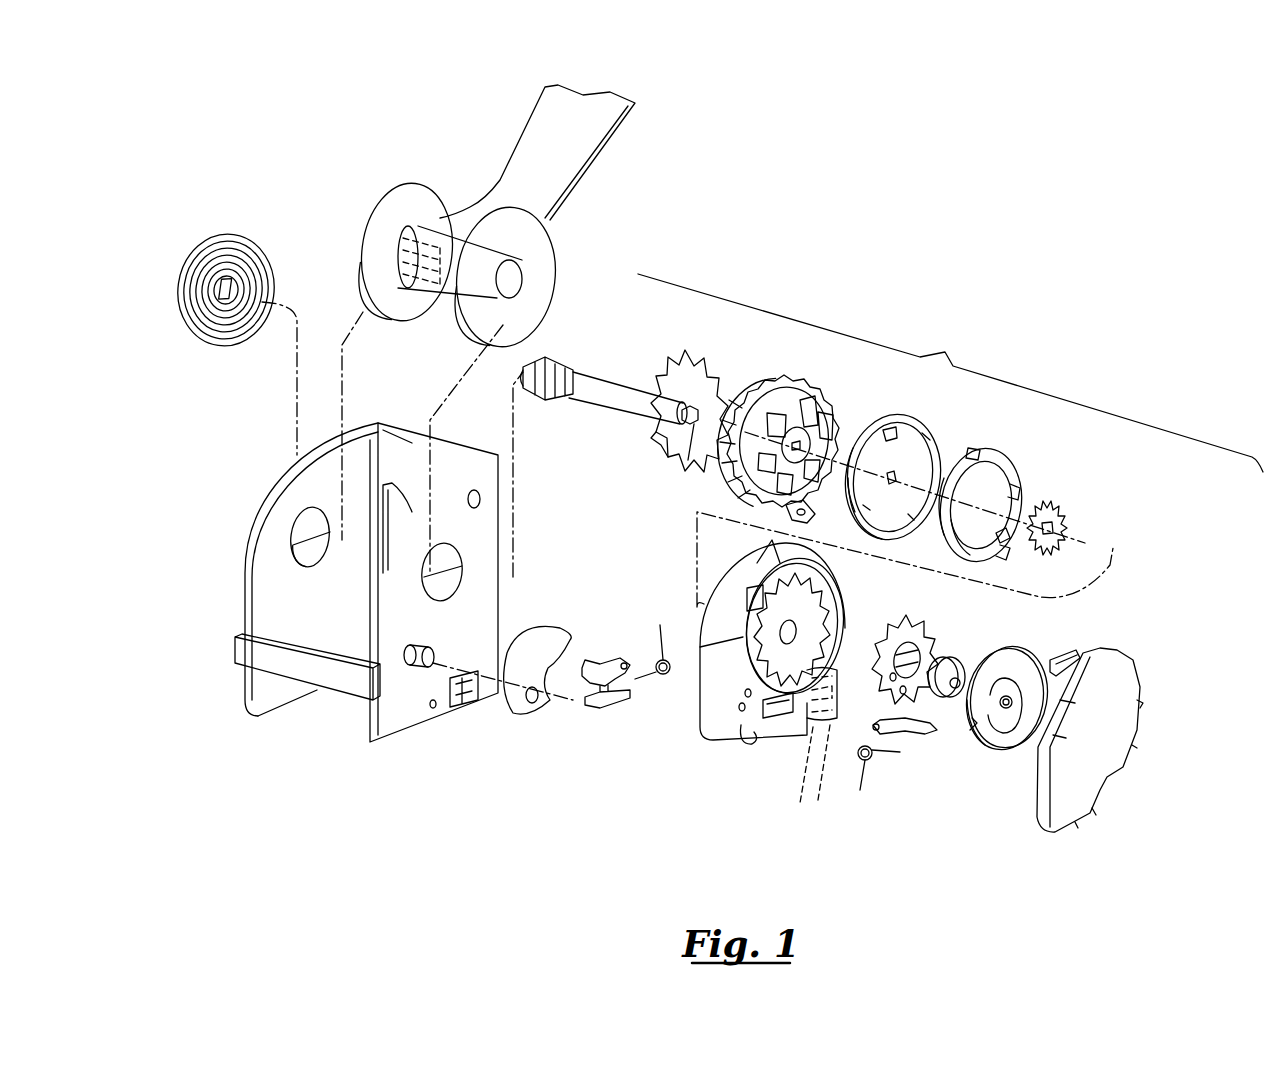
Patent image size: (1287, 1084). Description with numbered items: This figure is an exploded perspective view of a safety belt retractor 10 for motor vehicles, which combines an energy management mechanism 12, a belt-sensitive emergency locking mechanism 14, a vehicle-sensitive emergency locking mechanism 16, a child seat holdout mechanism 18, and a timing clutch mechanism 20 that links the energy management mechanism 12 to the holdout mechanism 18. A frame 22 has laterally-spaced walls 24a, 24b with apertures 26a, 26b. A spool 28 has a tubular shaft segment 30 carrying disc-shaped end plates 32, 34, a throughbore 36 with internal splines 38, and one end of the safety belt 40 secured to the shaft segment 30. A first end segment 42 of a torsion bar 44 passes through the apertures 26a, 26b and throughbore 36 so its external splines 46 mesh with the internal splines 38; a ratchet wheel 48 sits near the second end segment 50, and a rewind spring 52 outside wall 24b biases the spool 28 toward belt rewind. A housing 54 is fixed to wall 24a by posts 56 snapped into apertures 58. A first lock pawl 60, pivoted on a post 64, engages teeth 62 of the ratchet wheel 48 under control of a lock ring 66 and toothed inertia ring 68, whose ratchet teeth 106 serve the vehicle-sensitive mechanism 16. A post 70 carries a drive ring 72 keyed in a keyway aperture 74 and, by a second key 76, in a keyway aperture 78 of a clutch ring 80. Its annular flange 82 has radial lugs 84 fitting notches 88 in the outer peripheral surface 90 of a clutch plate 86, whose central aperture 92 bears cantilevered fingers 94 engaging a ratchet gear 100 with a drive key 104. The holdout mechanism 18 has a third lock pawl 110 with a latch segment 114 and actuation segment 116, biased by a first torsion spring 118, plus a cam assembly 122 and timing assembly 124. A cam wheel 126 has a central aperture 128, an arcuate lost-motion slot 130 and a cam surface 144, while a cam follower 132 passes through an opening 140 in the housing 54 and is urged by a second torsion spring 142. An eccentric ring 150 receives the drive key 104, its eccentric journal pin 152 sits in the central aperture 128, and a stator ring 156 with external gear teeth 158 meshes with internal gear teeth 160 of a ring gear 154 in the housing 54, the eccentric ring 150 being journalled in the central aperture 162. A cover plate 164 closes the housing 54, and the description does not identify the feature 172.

The safety belt retractor 10 is at (950, 373).
The energy management mechanism 12 is at (516, 330).
The belt-sensitive emergency locking mechanism 14 is at (787, 443).
The vehicle-sensitive emergency locking mechanism 16 is at (806, 778).
The child seat holdout mechanism 18 is at (1113, 712).
The timing clutch mechanism 20 is at (927, 493).
The frame 22 is at (411, 601).
The wall 24a is at (472, 601).
The wall 24b is at (307, 589).
The aperture 26a is at (453, 590).
The aperture 26b is at (318, 553).
The spool 28 is at (442, 297).
The tubular shaft segment 30 is at (480, 251).
The end plate 32 is at (395, 213).
The end plate 34 is at (545, 240).
The throughbore 36 is at (510, 278).
The internal splines 38 is at (418, 285).
The safety belt 40 is at (607, 120).
The first end segment 42 is at (533, 363).
The torsion bar 44 is at (604, 368).
The external splines 46 is at (546, 405).
The ratchet wheel 48 is at (657, 415).
The second end segment 50 is at (684, 413).
The rewind spring 52 is at (243, 243).
The housing 54 is at (765, 685).
The posts 56 is at (780, 550).
The apertures 58 is at (482, 501).
The first lock pawl 60 is at (530, 707).
The teeth 62 is at (653, 432).
The post 64 is at (413, 668).
The lock ring 66 is at (762, 383).
The toothed inertia ring 68 is at (813, 410).
The post 70 is at (690, 432).
The drive ring 72 is at (810, 433).
The keyway aperture 74 is at (706, 455).
The second key 76 is at (812, 421).
The keyway aperture 78 is at (890, 482).
The clutch ring 80 is at (920, 463).
The annular flange 82 is at (930, 432).
The radial lugs 84 is at (880, 436).
The clutch plate 86 is at (988, 505).
The notches 88 is at (970, 458).
The outer peripheral surface 90 is at (955, 523).
The central aperture 92 is at (1008, 532).
The cantilevered fingers 94 is at (1012, 489).
The ratchet gear 100 is at (1085, 519).
The drive key 104 is at (1054, 527).
The ratchet teeth 106 is at (748, 487).
The third lock pawl 110 is at (606, 673).
The latch segment 114 is at (584, 665).
The actuation segment 116 is at (613, 707).
The first torsion spring 118 is at (666, 623).
The cam assembly 122 is at (984, 717).
The timing assembly 124 is at (934, 639).
The cam wheel 126 is at (1075, 655).
The central aperture 128 is at (1010, 705).
The arcuate lost-motion slot 130 is at (1040, 708).
The cam follower 132 is at (920, 737).
The opening 140 is at (773, 713).
The second torsion spring 142 is at (867, 761).
The cam surface 144 is at (1029, 725).
The eccentric ring 150 is at (975, 718).
The eccentric journal pin 152 is at (958, 692).
The ring gear 154 is at (823, 597).
The stator ring 156 is at (914, 647).
The external gear teeth 158 is at (893, 617).
The internal gear teeth 160 is at (830, 592).
The central aperture 162 is at (952, 648).
The cover plate 164 is at (1124, 724).
The housing boss 172 is at (837, 695).